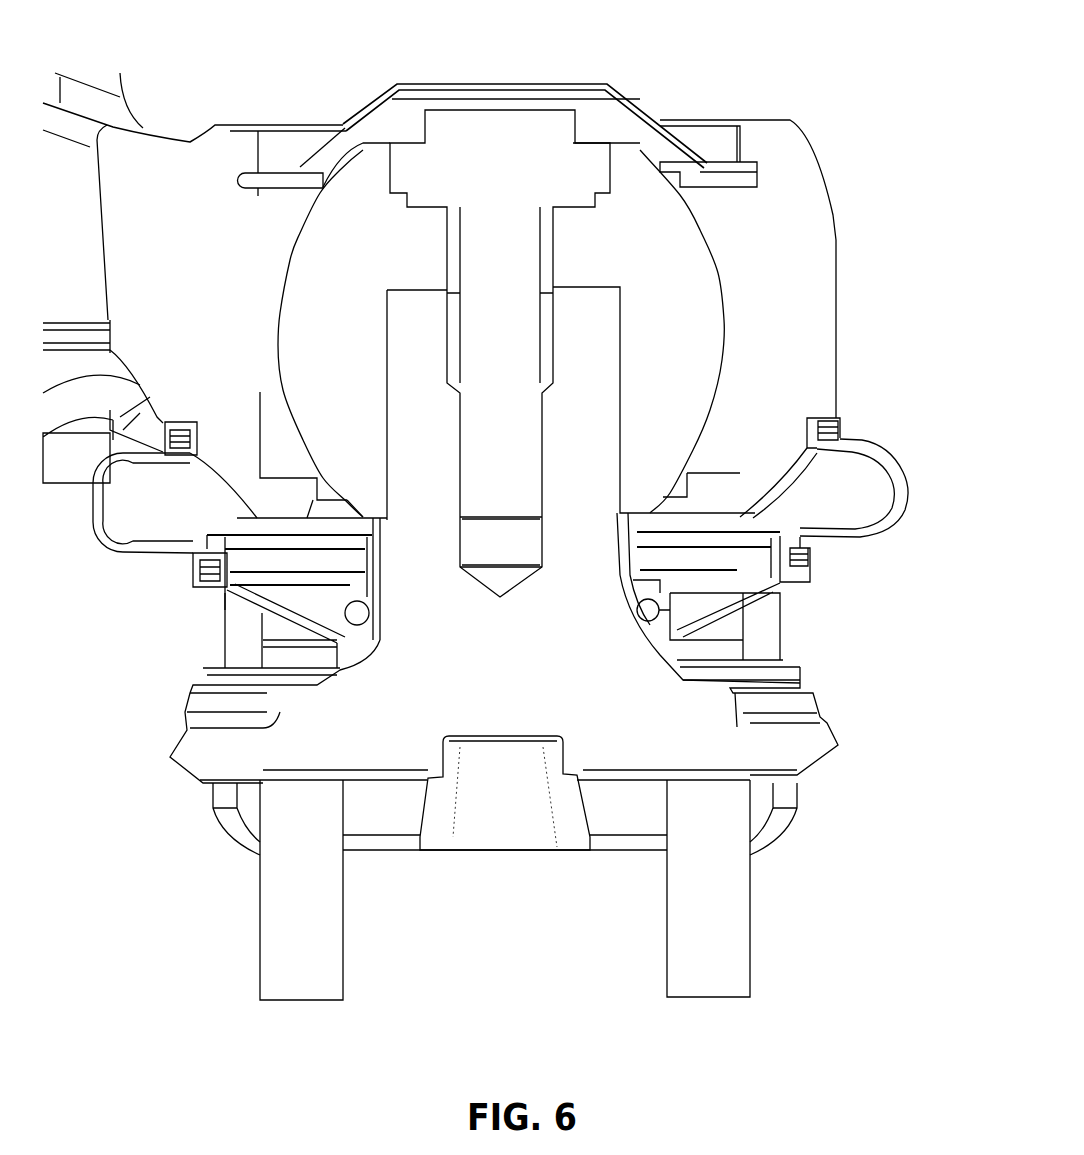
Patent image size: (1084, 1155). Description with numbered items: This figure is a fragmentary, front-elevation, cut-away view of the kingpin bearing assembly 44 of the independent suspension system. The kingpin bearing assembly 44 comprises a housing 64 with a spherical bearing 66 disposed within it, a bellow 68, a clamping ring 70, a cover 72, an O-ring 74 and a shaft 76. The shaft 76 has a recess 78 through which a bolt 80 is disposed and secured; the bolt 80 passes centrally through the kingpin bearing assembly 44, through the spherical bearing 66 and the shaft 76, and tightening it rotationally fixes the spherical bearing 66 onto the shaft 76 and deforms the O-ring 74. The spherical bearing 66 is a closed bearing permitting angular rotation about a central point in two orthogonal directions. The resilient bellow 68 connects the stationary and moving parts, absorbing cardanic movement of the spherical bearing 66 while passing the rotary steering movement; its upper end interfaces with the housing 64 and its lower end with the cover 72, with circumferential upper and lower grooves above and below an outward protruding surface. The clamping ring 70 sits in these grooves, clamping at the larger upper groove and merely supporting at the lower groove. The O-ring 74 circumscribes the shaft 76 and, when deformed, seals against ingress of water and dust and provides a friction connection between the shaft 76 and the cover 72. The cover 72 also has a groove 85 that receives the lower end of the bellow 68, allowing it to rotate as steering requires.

The kingpin bearing assembly 44 is at (785, 80).
The housing 64 is at (770, 340).
The spherical bearing 66 is at (677, 313).
The bellow 68 is at (868, 537).
The clamping ring 70 is at (833, 422).
The cover 72 is at (743, 595).
The O-ring 74 is at (648, 613).
The shaft 76 is at (573, 652).
The recess 78 is at (490, 543).
The bolt 80 is at (510, 170).
The groove 85 is at (817, 567).